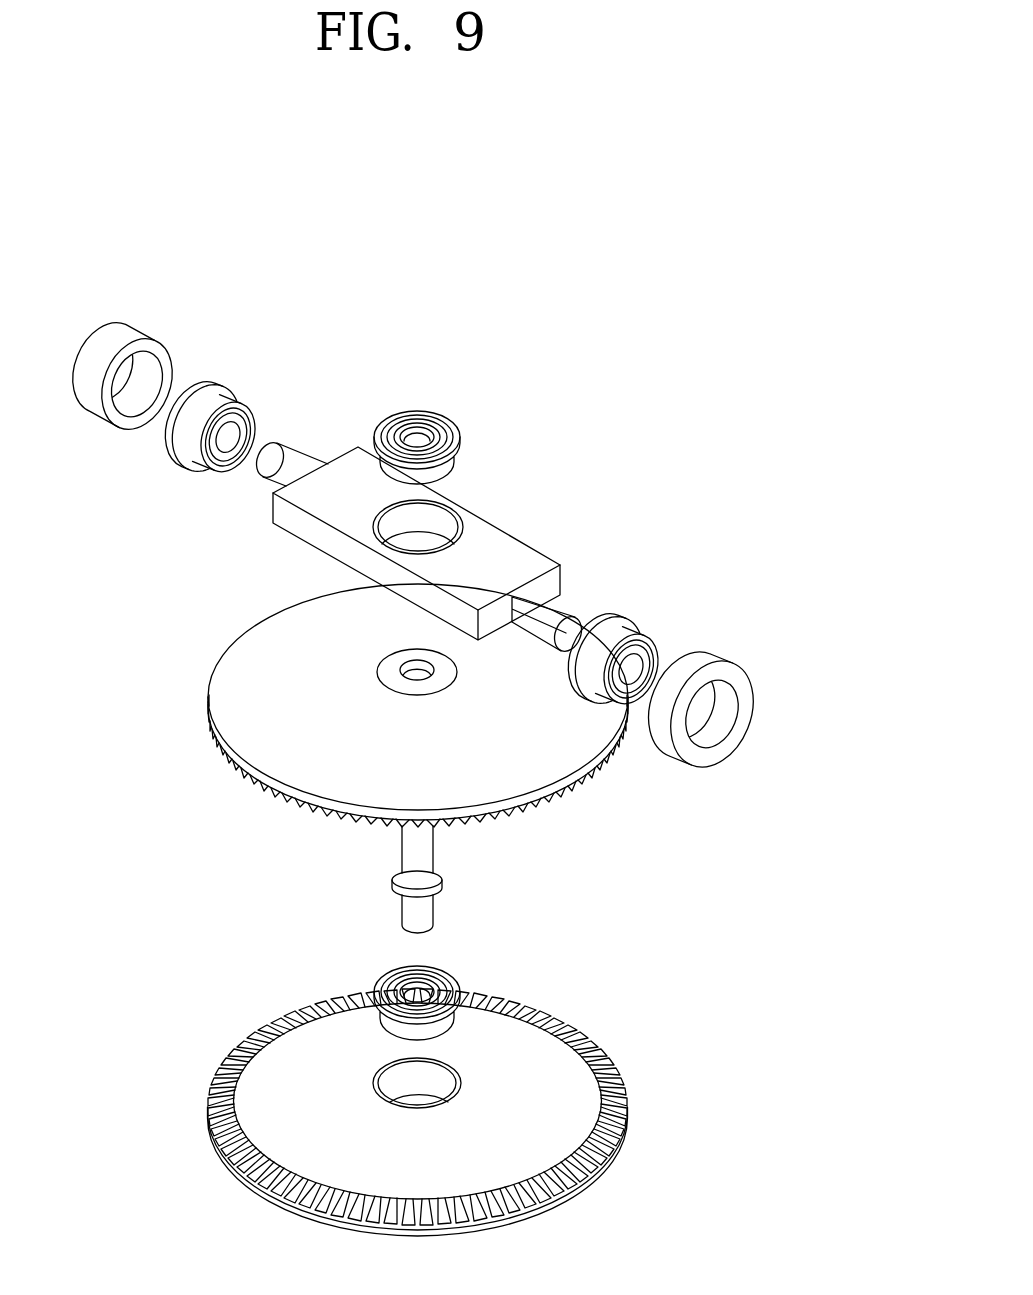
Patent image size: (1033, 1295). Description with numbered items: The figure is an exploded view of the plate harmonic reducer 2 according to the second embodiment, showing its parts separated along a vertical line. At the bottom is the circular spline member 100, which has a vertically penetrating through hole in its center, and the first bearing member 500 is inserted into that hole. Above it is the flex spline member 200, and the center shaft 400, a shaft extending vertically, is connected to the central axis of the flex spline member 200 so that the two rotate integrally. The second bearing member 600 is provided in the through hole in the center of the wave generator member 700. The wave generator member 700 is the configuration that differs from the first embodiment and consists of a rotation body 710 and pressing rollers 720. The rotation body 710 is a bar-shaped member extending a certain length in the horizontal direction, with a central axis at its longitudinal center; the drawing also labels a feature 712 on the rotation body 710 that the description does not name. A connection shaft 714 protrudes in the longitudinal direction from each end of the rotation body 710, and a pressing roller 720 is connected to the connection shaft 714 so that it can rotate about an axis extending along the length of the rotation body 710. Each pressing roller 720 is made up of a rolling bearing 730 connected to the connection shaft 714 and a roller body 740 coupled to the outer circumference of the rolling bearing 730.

The plate harmonic reducer 2 is at (620, 380).
The circular spline member 100 is at (628, 1069).
The flex spline member 200 is at (578, 792).
The center shaft 400 is at (445, 908).
The first bearing member 500 is at (453, 411).
The second bearing member 600 is at (377, 967).
The wave generator member 700 is at (530, 530).
The rotation body 710 is at (348, 470).
The through hole 712 is at (437, 528).
The connection shaft 714 is at (559, 616).
The pressing roller 720 is at (739, 592).
The rolling bearing 730 is at (742, 680).
The roller body 740 is at (638, 633).